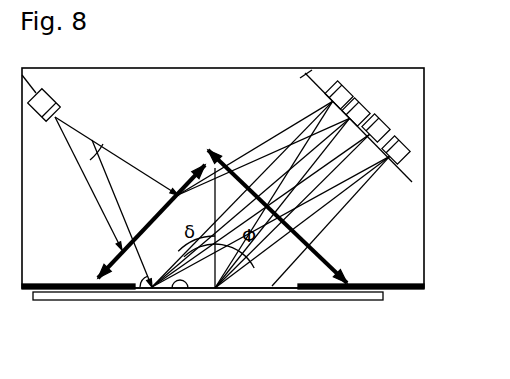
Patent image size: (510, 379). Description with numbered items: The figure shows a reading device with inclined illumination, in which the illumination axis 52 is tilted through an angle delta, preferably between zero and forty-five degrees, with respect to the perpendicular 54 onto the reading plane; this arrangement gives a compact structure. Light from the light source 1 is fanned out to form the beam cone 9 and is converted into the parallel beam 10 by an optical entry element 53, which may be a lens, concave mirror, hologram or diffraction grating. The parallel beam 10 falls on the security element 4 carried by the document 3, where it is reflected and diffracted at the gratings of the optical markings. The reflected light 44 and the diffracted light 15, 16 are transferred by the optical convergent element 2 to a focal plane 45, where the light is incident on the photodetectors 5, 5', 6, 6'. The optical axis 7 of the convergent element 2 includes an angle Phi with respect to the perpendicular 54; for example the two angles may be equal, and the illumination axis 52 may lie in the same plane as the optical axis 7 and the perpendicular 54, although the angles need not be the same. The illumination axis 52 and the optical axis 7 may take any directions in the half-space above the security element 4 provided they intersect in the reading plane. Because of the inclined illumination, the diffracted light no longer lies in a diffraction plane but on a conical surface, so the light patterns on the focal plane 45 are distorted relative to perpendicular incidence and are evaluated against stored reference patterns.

The light source 1 is at (52, 92).
The optical convergent element 2 is at (233, 170).
The document 3 is at (50, 300).
The security element 4 is at (208, 291).
The photodetector 5 is at (357, 107).
The photodetector 5' is at (346, 93).
The photodetector 6 is at (382, 127).
The photodetector 6' is at (398, 173).
The optical axis 7 is at (382, 108).
The beam cone 9 is at (92, 202).
The parallel beam 10 is at (121, 291).
The diffracted light 15 is at (272, 157).
The diffracted light 16 is at (372, 214).
The reflected light 44 is at (328, 216).
The focal plane 45 is at (308, 75).
The illumination axis 52 is at (102, 147).
The optical entry element 53 is at (184, 173).
The perpendicular 54 is at (207, 153).